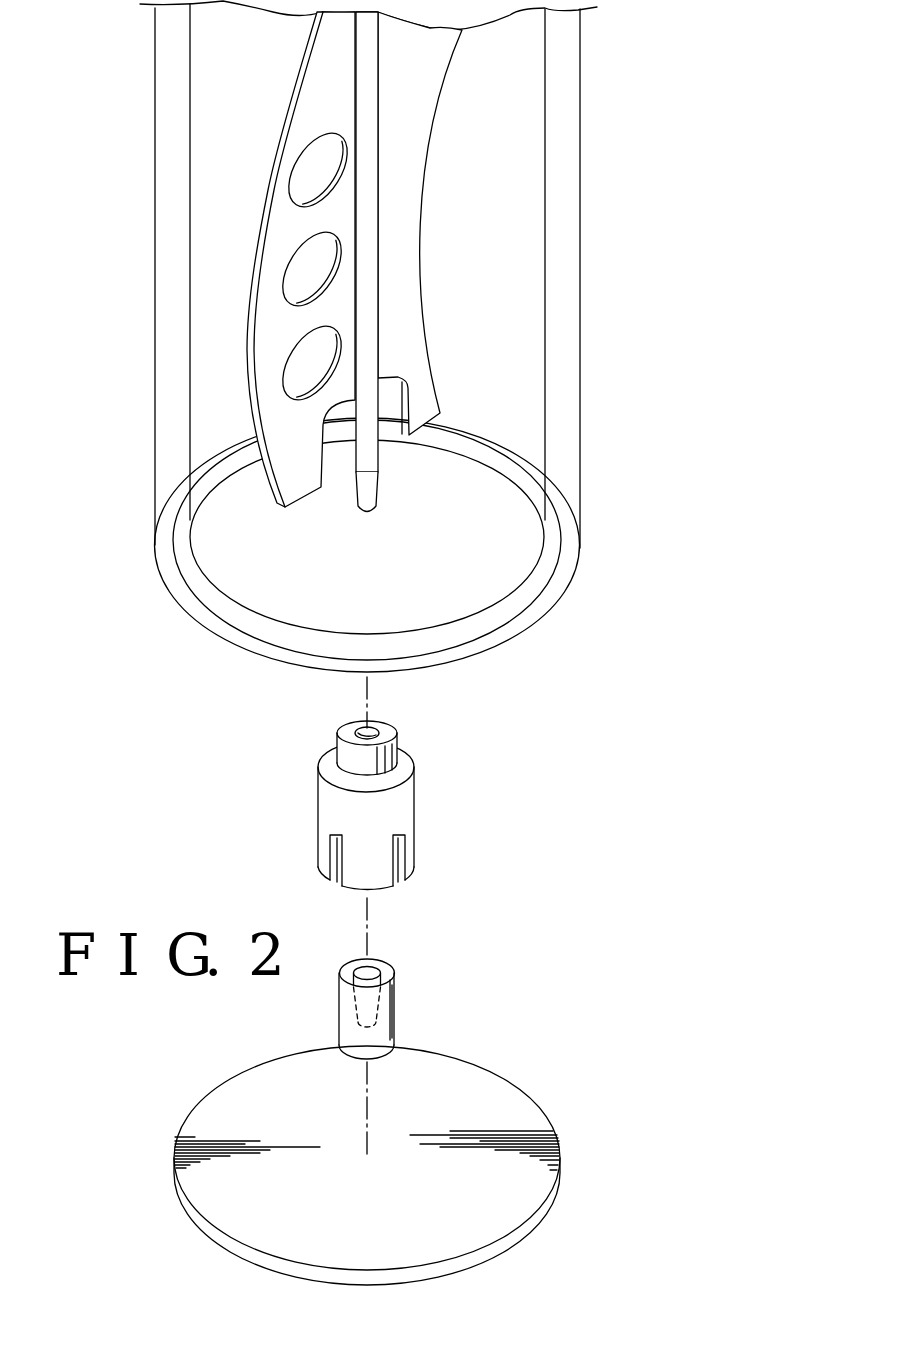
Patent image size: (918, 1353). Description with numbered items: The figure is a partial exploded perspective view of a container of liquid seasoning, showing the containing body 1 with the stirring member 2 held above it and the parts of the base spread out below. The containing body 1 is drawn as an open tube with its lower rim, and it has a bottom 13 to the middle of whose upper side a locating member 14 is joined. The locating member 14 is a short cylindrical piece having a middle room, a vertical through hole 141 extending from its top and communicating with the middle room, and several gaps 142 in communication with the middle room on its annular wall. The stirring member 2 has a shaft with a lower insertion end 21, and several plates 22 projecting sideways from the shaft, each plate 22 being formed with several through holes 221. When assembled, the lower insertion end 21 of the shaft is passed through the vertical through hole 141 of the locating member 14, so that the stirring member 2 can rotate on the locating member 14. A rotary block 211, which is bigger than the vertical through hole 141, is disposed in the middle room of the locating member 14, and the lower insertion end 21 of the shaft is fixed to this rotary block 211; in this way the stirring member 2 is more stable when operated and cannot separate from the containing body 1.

The containing body 1 is at (178, 320).
The stirring member 2 is at (487, 331).
The lower insertion end 21 is at (370, 500).
The rotary block 211 is at (395, 1012).
The plate 22 is at (268, 259).
The through holes 221 is at (305, 183).
The bottom 13 is at (495, 1097).
The locating member 14 is at (412, 793).
The vertical through hole 141 is at (378, 728).
The gaps 142 is at (398, 882).